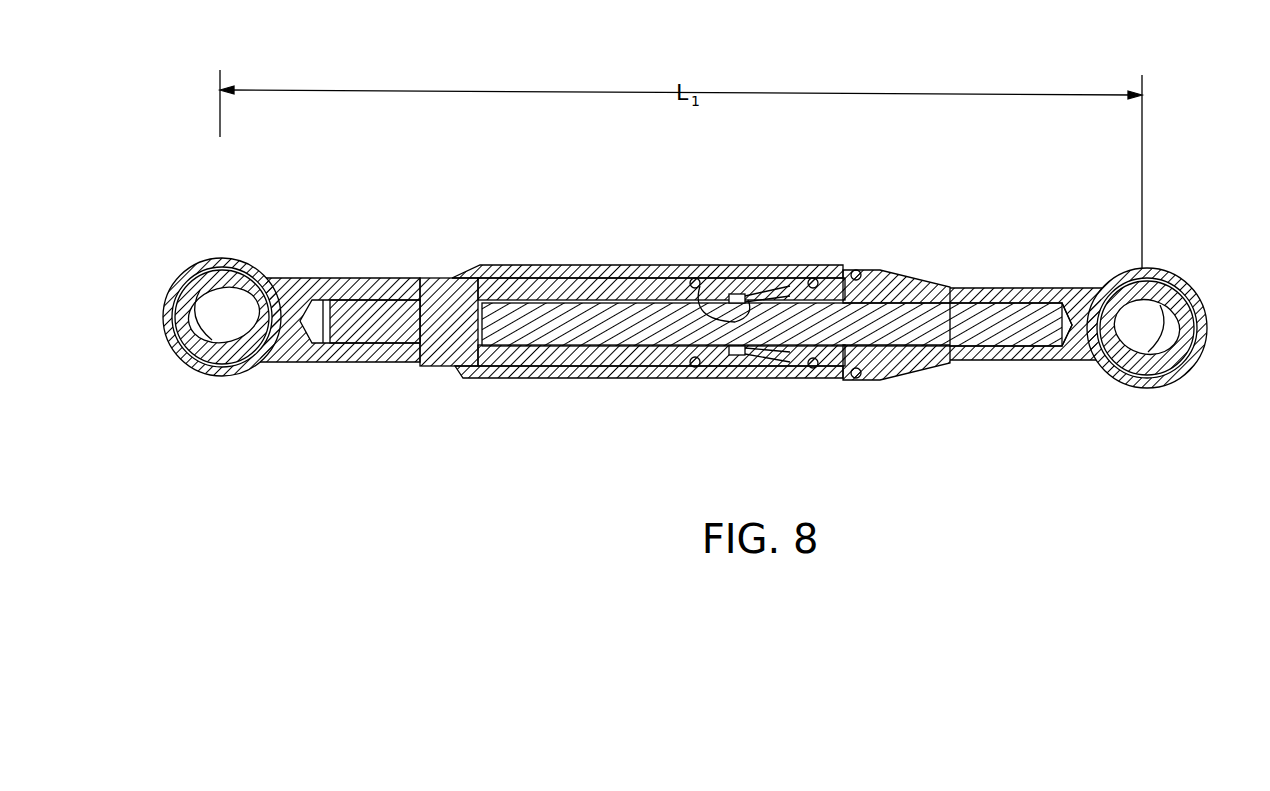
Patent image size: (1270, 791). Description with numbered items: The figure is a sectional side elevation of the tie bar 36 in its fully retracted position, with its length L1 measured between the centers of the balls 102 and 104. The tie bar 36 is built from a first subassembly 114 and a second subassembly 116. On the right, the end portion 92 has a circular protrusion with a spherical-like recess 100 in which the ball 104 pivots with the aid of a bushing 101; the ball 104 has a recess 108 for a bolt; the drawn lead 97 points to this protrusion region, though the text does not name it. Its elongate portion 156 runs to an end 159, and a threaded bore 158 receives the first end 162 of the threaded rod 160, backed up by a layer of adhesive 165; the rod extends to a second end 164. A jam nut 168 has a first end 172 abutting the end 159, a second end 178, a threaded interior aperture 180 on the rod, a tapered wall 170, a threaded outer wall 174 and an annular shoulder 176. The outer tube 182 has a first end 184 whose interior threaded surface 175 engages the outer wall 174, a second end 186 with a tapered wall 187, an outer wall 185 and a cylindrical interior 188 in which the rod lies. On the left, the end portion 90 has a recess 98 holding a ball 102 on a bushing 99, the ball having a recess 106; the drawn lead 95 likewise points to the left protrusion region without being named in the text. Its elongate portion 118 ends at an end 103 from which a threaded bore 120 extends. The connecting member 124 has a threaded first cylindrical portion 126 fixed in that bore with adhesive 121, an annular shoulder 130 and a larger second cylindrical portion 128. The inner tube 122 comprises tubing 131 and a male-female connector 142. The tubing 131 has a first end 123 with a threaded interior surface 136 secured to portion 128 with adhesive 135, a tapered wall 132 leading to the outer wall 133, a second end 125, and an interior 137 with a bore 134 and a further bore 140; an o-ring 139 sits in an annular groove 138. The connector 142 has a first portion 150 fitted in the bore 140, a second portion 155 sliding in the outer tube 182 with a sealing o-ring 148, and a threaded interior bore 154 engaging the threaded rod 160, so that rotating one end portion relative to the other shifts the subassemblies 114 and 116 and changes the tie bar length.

The tie bar 36 is at (1185, 156).
The end portion 90 is at (210, 395).
The end portion 92 is at (1197, 388).
The first eye 95 is at (232, 262).
The second eye 97 is at (1157, 268).
The spherical-like recess 98 is at (245, 262).
The bushing 99 is at (222, 320).
The spherical-like recess 100 is at (1188, 300).
The bushing 101 is at (1173, 278).
The ball 102 is at (187, 358).
The end 103 is at (427, 362).
The ball 104 is at (1188, 323).
The recess 106 is at (192, 283).
The recess 108 is at (1142, 313).
The first subassembly 114 is at (1207, 445).
The second subassembly 116 is at (163, 150).
The elongate portion 118 is at (338, 284).
The threaded bore 120 is at (323, 358).
The adhesive 121 is at (352, 358).
The inner tube 122 is at (614, 279).
The first end 123 is at (383, 360).
The connecting member 124 is at (370, 307).
The second end 125 is at (790, 372).
The first cylindrical portion 126 is at (340, 300).
The second cylindrical portion 128 is at (422, 283).
The annular shoulder 130 is at (398, 282).
The tubing 131 is at (590, 275).
The tapered wall 132 is at (432, 368).
The outer wall 133 is at (598, 378).
The bore 134 is at (548, 378).
The adhesive 135 is at (445, 372).
The interior surface 136 is at (463, 376).
The interior 137 is at (642, 378).
The annular groove 138 is at (690, 367).
The o-ring 139 is at (735, 356).
The bore 140 is at (692, 278).
The male-female connector 142 is at (829, 279).
The o-ring 148 is at (808, 283).
The first portion 150 is at (745, 296).
The threaded interior bore 154 is at (738, 318).
The second portion 155 is at (782, 280).
The elongate portion 156 is at (1038, 288).
The threaded bore 158 is at (1047, 357).
The end 159 is at (940, 368).
The threaded rod 160 is at (660, 282).
The first end 162 is at (1068, 327).
The second end 164 is at (490, 285).
The adhesive 165 is at (1027, 362).
The jam nut 168 is at (927, 276).
The tapered wall 170 is at (940, 366).
The first end 172 is at (990, 288).
The threaded outer wall 174 is at (873, 280).
The interior threaded surface 175 is at (858, 274).
The annular shoulder 176 is at (858, 378).
The second end 178 is at (810, 368).
The threaded interior aperture 180 is at (895, 378).
The outer tube 182 is at (765, 282).
The first end 184 is at (900, 275).
The outer wall 185 is at (520, 270).
The second end 186 is at (455, 278).
The tapered wall 187 is at (476, 270).
The interior 188 is at (540, 272).